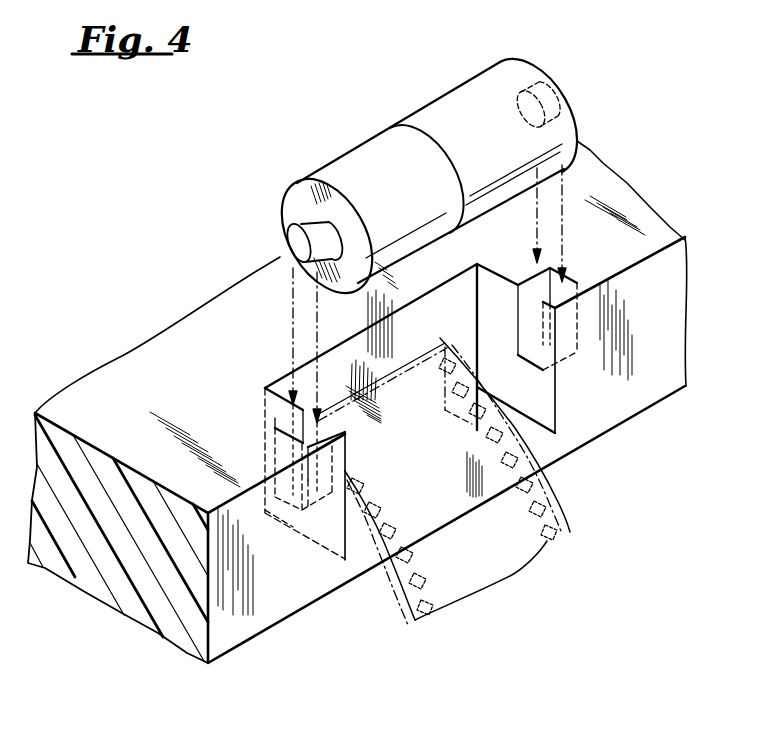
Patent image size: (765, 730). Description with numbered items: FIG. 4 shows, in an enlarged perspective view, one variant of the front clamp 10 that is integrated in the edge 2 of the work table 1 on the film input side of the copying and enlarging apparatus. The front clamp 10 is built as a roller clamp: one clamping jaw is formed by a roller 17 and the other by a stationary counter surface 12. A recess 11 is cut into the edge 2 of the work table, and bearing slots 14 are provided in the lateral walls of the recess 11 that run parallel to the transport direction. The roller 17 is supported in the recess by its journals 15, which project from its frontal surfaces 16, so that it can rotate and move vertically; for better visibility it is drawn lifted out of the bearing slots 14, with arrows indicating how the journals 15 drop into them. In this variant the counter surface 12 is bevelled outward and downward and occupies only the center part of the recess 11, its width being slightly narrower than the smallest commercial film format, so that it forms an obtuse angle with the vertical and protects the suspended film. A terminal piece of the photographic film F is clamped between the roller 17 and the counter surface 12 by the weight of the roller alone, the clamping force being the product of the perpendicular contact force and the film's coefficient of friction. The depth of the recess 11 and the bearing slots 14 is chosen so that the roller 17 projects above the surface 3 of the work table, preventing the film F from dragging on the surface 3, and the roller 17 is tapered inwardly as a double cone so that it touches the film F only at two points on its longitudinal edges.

The work table 1 is at (100, 590).
The edge of the work table 2 is at (688, 263).
The surface of the work table 3 is at (142, 377).
The front clamp 10 is at (620, 156).
The recess 11 is at (535, 405).
The counter surface 12 is at (430, 468).
The bearing slots 14 is at (281, 421).
The journals 15 is at (298, 246).
The frontal surfaces 16 is at (299, 200).
The roller 17 is at (344, 156).
The photographic film F is at (545, 541).